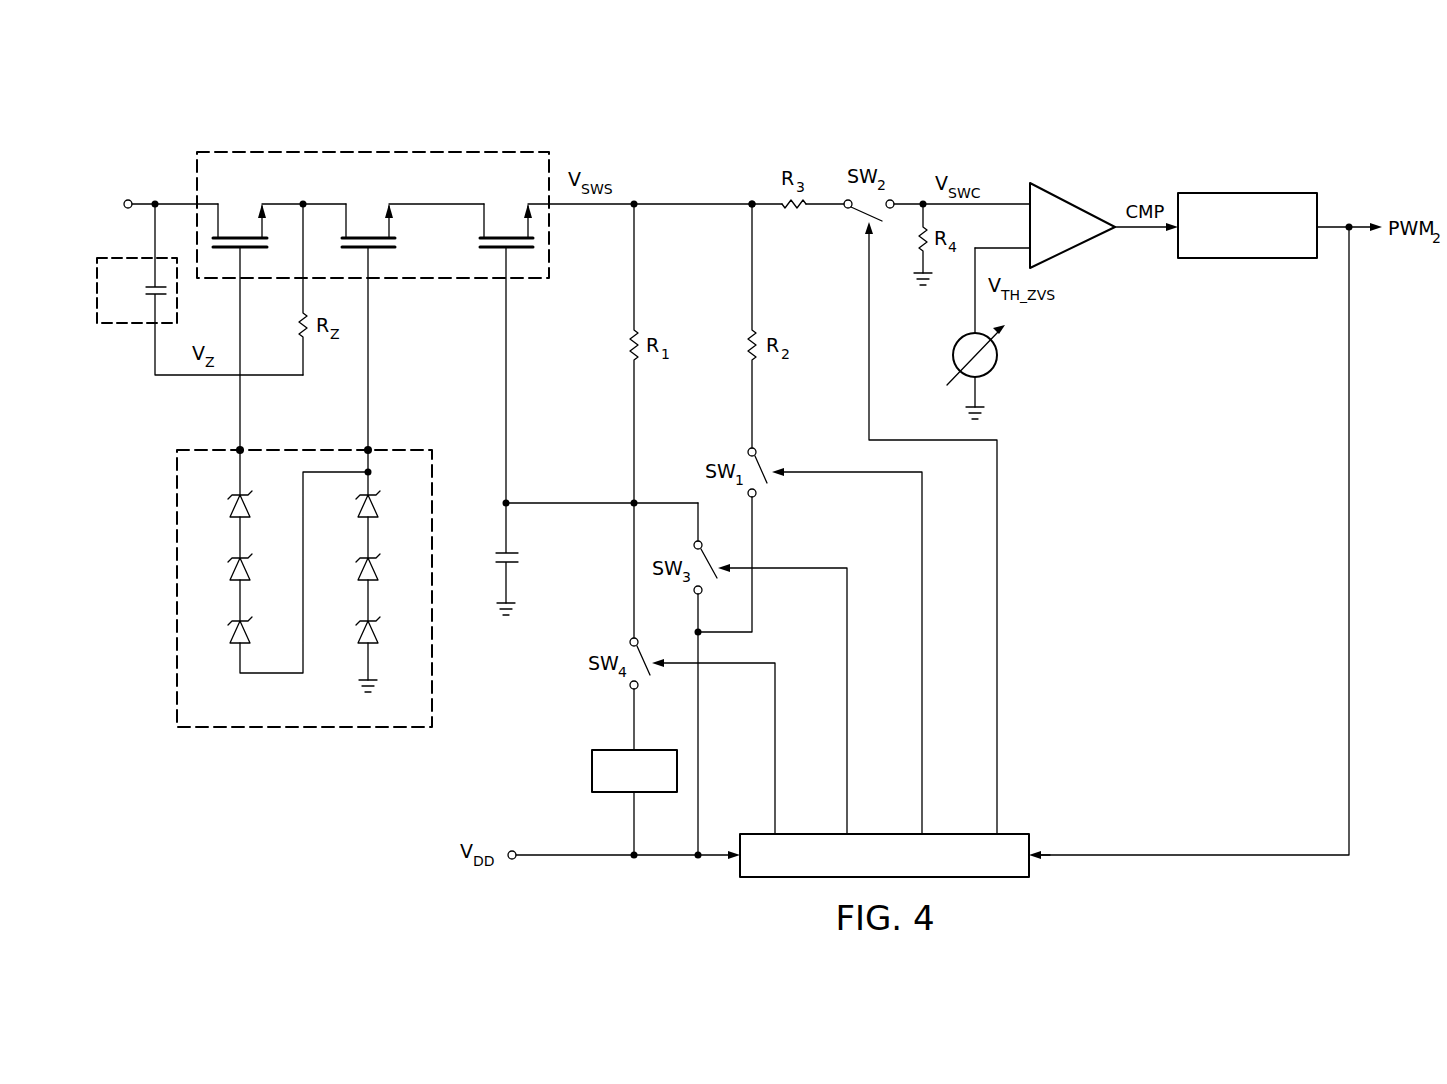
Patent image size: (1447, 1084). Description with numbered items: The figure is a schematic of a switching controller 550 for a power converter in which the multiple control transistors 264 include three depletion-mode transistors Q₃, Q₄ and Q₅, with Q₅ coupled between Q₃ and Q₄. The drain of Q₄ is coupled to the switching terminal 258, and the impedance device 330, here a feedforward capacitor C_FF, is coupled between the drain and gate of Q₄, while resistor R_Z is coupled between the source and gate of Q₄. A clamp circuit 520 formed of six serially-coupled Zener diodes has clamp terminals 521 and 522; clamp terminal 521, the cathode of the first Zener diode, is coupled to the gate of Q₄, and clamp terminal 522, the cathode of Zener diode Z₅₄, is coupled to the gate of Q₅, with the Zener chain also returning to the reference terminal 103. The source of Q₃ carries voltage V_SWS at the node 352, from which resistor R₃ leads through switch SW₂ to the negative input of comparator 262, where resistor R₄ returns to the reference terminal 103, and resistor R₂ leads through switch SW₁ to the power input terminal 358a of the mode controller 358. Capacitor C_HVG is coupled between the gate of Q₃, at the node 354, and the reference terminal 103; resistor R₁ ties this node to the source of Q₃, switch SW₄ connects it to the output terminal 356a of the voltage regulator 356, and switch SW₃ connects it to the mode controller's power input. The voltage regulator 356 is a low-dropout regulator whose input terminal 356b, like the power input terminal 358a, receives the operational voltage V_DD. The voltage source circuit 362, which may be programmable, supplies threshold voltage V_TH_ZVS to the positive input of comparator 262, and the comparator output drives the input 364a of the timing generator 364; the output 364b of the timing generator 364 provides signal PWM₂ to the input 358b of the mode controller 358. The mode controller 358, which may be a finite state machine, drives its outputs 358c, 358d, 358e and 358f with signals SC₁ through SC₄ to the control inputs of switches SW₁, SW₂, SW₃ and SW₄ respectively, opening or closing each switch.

The switching terminal 258 is at (127, 197).
The multiple control transistors 264 is at (308, 152).
The impedance device 330 is at (125, 323).
The sense node 352 is at (748, 197).
The high voltage gate node 354 is at (503, 510).
The voltage regulator 356 is at (591, 772).
The output terminal of the voltage regulator 356a is at (630, 743).
The input terminal of the voltage regulator 356b is at (630, 795).
The mode controller 358 is at (967, 880).
The power input terminal of the mode controller 358a is at (737, 862).
The input of the mode controller 358b is at (1033, 862).
The output of the mode controller 358c is at (930, 825).
The output of the mode controller 358d is at (1005, 825).
The output of the mode controller 358e is at (855, 825).
The output of the mode controller 358f is at (780, 825).
The voltage source circuit 362 is at (998, 352).
The timing generator 364 is at (1248, 193).
The input of the timing generator 364a is at (1168, 233).
The output of the timing generator 364b is at (1322, 218).
The clamp circuit 520 is at (253, 728).
The clamp terminal 521 is at (235, 445).
The clamp terminal 522 is at (373, 445).
The switching controller 550 is at (1350, 121).
The comparator 262 is at (1072, 200).
The reference terminal 103 is at (360, 684).